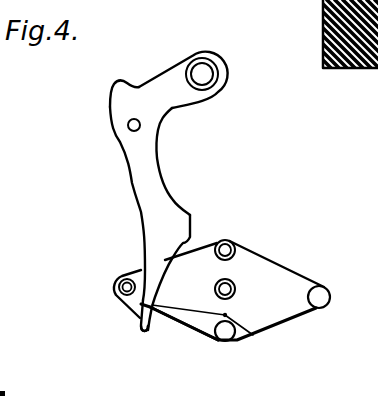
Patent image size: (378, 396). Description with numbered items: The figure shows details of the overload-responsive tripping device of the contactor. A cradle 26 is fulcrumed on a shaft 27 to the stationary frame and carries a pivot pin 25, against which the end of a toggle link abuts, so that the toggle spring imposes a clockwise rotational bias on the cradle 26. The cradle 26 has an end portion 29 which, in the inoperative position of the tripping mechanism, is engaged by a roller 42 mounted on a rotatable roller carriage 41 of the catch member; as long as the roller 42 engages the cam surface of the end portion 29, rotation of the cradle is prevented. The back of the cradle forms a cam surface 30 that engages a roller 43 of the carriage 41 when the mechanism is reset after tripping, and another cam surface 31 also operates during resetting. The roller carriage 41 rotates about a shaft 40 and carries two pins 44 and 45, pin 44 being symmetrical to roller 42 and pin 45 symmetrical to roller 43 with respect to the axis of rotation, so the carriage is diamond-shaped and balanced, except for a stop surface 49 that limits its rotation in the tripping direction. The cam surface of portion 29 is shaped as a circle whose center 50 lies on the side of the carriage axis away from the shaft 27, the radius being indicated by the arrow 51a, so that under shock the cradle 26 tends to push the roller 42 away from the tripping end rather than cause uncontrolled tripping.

The pivot pin 25 is at (140, 126).
The cradle 26 is at (138, 183).
The shaft 27 is at (215, 83).
The end portion 29 is at (139, 327).
The cam surface 30 is at (176, 252).
The cam surface 31 is at (137, 84).
The shaft 40 is at (233, 283).
The roller carriage 41 is at (290, 275).
The roller 42 is at (115, 282).
The roller 43 is at (232, 242).
The pin 44 is at (330, 297).
The pin 45 is at (225, 341).
The stop surface 49 is at (148, 332).
The center of circular cam curve 50 is at (254, 336).
The radius 51a is at (193, 313).